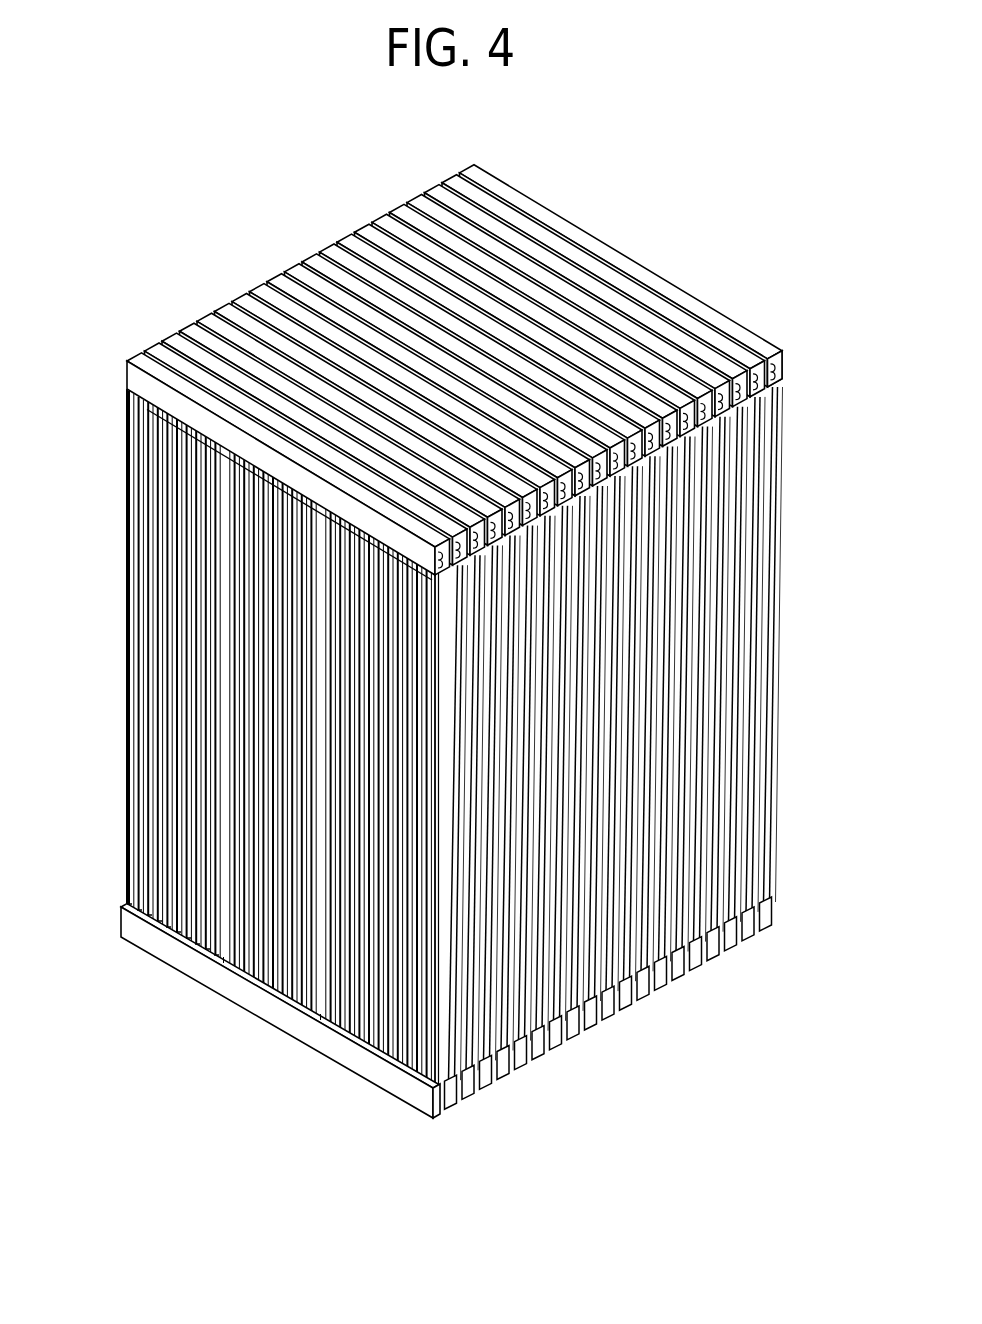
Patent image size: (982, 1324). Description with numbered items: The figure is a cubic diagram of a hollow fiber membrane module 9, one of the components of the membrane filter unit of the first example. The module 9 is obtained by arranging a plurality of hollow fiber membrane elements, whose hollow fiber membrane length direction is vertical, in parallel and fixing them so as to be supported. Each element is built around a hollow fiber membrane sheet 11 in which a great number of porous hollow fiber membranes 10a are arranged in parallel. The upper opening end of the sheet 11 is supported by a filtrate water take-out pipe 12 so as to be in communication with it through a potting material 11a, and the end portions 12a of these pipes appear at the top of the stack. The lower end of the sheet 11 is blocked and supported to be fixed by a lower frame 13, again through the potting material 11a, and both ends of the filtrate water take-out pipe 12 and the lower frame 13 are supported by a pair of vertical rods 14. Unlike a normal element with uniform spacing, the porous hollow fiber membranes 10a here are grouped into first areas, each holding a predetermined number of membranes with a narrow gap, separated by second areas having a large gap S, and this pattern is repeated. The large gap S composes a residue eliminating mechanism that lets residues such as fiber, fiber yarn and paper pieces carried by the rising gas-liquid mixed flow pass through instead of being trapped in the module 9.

The hollow fiber membrane module 9 is at (190, 222).
The porous hollow fiber membranes 10a is at (190, 855).
The hollow fiber membrane sheet 11 is at (165, 797).
The potting material 11a is at (393, 1062).
The filtrate water take-out pipe 12 is at (135, 357).
The end portion of upper holding bar 12a is at (781, 372).
The lower frame 13 is at (770, 915).
The vertical rods 14 is at (778, 540).
The large gap S is at (230, 962).